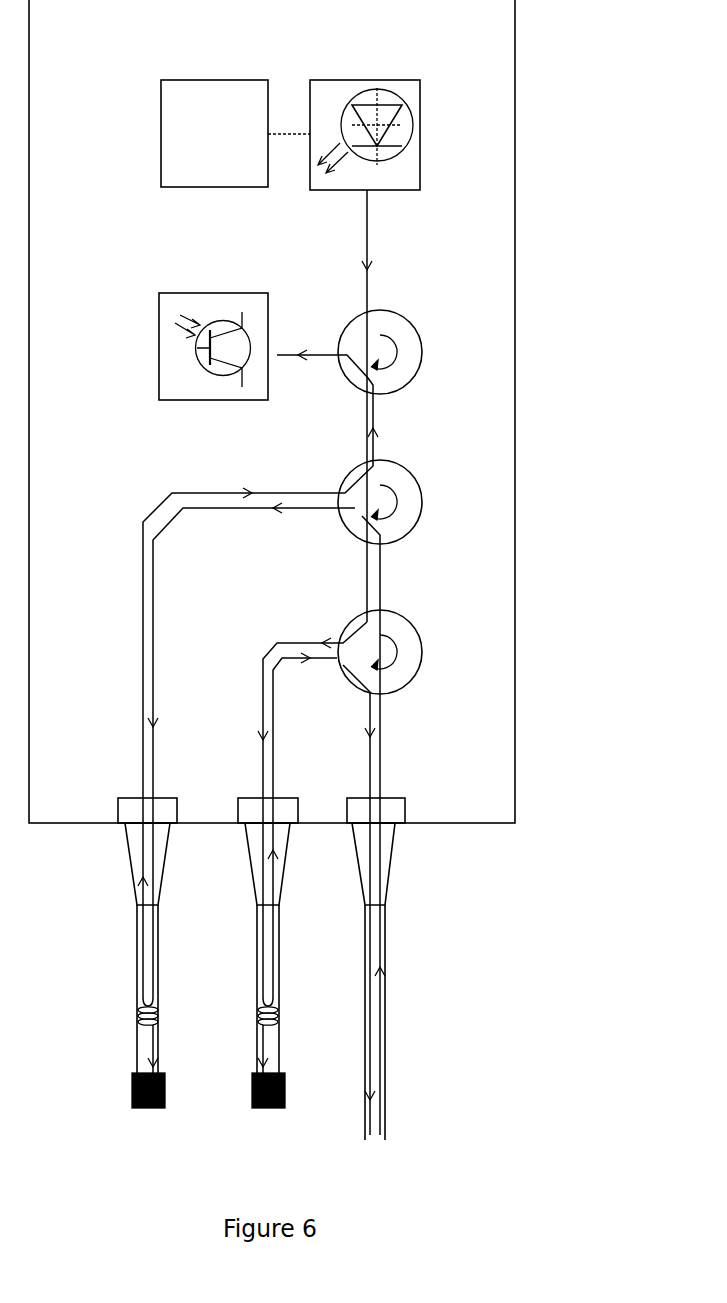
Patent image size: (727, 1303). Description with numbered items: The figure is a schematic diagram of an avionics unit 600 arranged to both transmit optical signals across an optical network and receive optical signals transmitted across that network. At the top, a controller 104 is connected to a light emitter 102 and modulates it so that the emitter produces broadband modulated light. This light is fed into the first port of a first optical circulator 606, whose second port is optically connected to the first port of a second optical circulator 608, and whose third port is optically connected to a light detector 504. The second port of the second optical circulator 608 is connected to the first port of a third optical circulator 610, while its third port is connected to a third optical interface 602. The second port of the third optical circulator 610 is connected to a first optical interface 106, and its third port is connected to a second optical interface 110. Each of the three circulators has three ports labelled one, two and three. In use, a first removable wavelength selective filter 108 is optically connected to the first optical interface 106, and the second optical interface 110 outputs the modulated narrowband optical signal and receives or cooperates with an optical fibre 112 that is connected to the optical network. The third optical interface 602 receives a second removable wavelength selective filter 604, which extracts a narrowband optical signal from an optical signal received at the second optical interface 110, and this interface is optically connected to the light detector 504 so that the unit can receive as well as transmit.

The light emitter 102 is at (349, 80).
The controller 104 is at (181, 83).
The light detector 504 is at (178, 292).
The avionics unit 600 is at (515, 90).
The first optical circulator 606 is at (417, 357).
The second optical circulator 608 is at (418, 500).
The third optical circulator 610 is at (418, 652).
The third optical interface 602 is at (127, 808).
The first optical interface 106 is at (255, 790).
The second optical interface 110 is at (403, 815).
The second removable wavelength selective filter 604 is at (133, 1018).
The first removable wavelength selective filter 108 is at (257, 1015).
The optical fibre 112 is at (385, 1042).